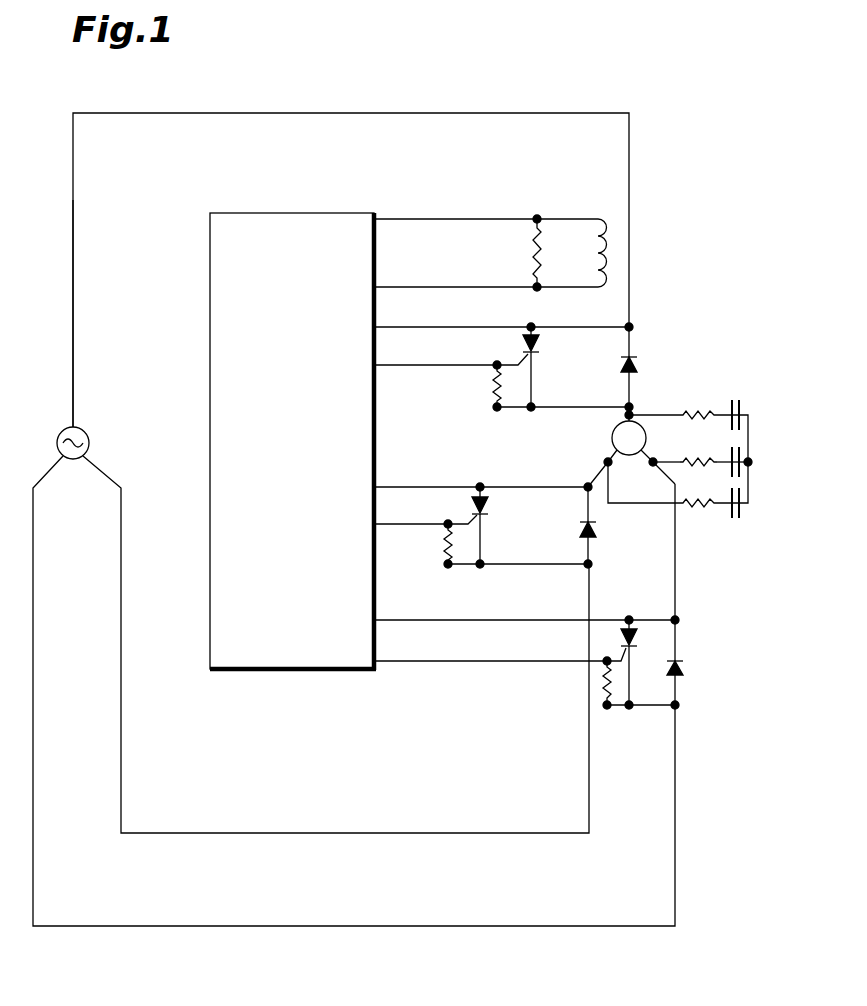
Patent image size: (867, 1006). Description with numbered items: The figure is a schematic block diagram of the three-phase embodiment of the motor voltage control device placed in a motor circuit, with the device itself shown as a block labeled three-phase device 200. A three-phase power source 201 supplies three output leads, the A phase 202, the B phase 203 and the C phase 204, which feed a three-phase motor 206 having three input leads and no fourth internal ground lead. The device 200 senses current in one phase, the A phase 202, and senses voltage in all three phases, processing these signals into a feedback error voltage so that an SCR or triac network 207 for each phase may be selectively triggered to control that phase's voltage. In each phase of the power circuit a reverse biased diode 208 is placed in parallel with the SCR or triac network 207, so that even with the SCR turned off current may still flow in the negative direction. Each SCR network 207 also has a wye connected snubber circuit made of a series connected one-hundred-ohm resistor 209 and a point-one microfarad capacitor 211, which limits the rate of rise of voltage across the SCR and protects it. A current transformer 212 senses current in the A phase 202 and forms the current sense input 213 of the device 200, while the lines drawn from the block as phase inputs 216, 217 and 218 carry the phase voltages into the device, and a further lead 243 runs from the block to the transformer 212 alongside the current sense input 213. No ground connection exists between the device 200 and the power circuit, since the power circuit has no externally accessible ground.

The three-phase device 200 is at (208, 392).
The three-phase power source 201 is at (58, 448).
The A phase 202 is at (73, 392).
The B phase 203 is at (121, 577).
The C phase 204 is at (33, 547).
The three-phase motor 206 is at (647, 432).
The SCR or triac network 207 is at (540, 346).
The reverse biased diode 208 is at (639, 365).
The resistor 209 is at (699, 410).
The capacitor 211 is at (730, 397).
The current transformer 212 is at (590, 215).
The current sense input 213 is at (381, 219).
The phase input 216 is at (381, 327).
The phase input 217 is at (378, 487).
The phase input 218 is at (384, 620).
The output line 243 is at (381, 287).